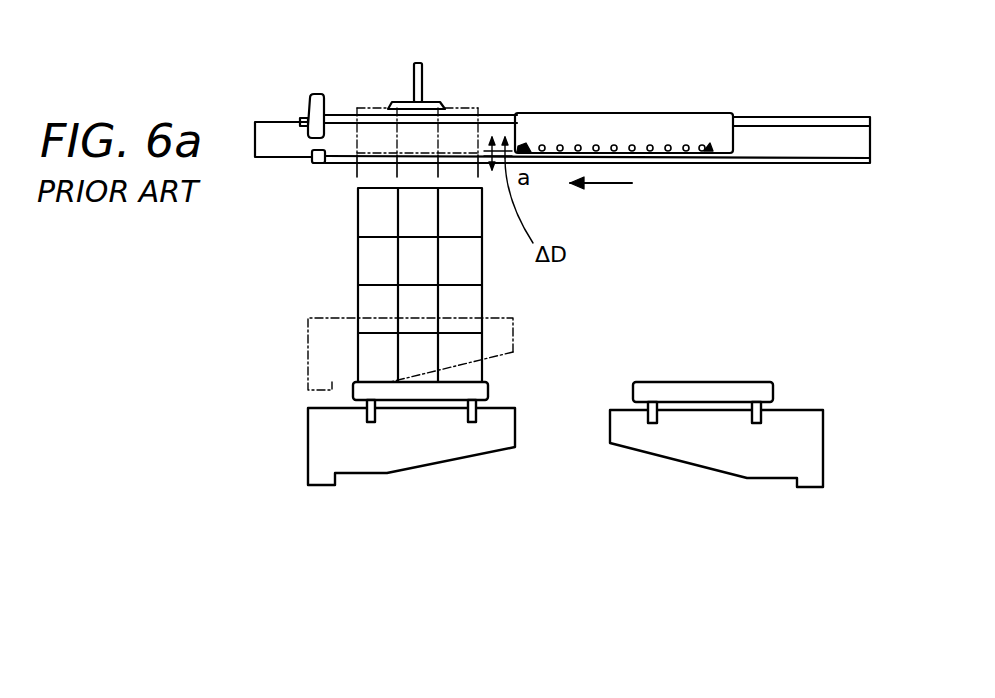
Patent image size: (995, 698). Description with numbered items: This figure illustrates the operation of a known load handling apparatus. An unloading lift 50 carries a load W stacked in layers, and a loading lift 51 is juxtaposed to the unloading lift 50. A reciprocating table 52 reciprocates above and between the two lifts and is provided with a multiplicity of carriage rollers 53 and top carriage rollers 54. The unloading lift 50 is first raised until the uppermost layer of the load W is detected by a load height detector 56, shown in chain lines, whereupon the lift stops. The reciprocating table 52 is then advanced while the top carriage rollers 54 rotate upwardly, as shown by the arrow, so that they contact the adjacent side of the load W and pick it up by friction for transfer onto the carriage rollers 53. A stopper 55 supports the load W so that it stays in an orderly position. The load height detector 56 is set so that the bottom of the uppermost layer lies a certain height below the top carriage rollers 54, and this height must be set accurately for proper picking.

The unloading lift 50 is at (315, 368).
The loading lift 51 is at (805, 440).
The reciprocating table 52 is at (671, 108).
The carriage rollers 53 is at (616, 146).
The top carriage rollers 54 is at (523, 146).
The stopper 55 is at (307, 125).
The load height detector 56 is at (421, 78).
The load W is at (368, 107).